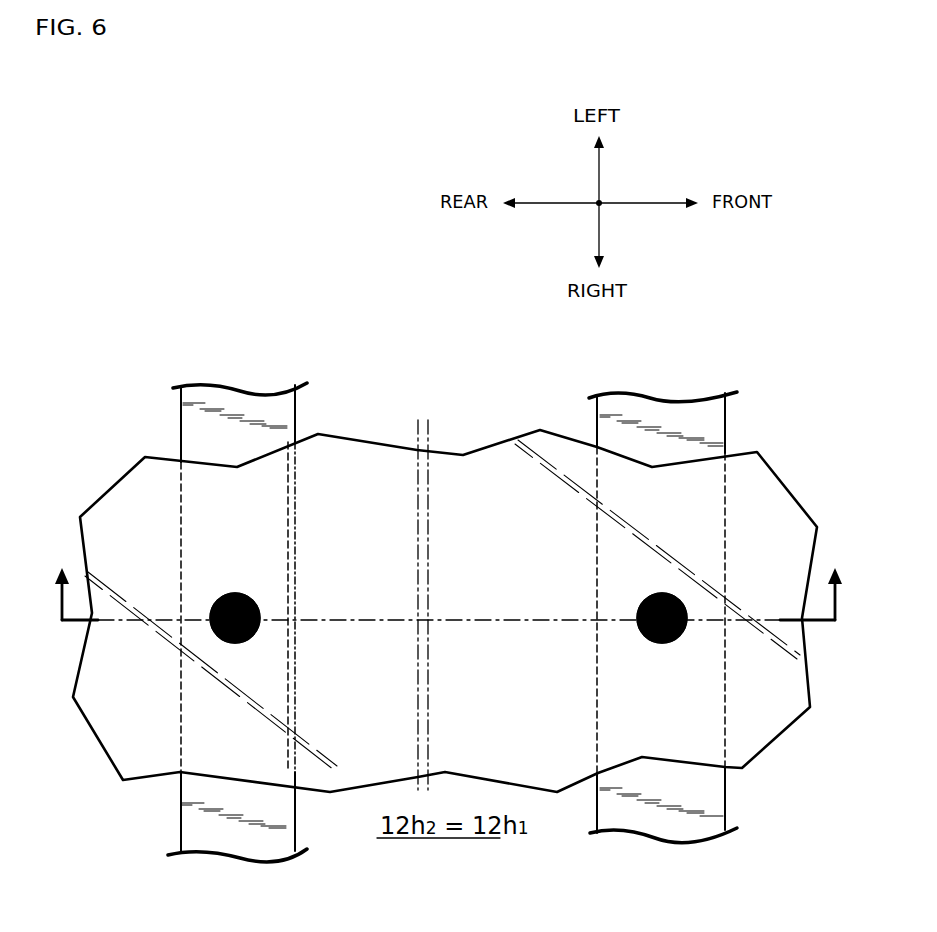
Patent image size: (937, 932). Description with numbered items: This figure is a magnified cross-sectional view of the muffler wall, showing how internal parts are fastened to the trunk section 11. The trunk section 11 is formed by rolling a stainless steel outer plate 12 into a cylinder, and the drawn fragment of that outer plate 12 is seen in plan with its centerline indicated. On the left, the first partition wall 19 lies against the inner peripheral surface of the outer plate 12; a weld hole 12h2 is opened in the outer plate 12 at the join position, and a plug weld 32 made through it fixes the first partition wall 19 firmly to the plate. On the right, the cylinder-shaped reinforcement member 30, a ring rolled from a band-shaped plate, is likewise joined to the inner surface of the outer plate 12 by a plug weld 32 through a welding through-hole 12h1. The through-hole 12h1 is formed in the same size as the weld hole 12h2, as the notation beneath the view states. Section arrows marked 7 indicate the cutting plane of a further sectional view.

The trunk section 11 is at (106, 485).
The first partition wall 19 is at (232, 433).
The cylinder-shaped reinforcement member 30 is at (678, 417).
The outer plate 12 is at (487, 467).
The plug weld 32 is at (227, 598).
The weld hole 12h2 is at (258, 635).
The welding through-hole 12h1 is at (684, 636).
The section line of FIG. 7 is at (448, 617).